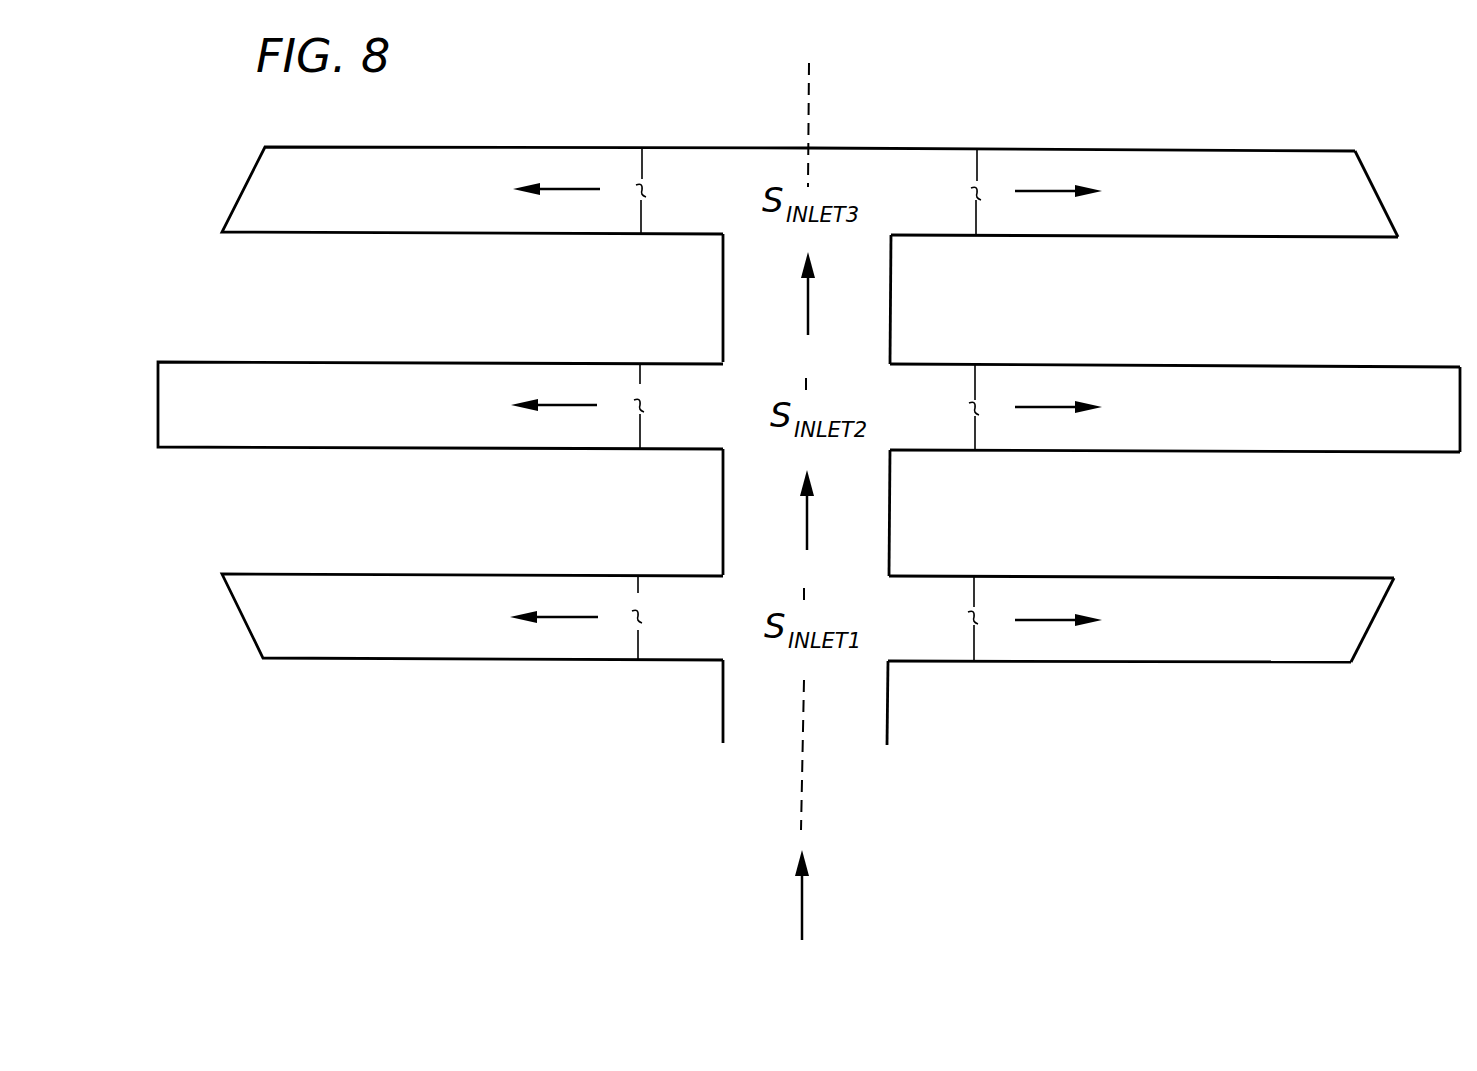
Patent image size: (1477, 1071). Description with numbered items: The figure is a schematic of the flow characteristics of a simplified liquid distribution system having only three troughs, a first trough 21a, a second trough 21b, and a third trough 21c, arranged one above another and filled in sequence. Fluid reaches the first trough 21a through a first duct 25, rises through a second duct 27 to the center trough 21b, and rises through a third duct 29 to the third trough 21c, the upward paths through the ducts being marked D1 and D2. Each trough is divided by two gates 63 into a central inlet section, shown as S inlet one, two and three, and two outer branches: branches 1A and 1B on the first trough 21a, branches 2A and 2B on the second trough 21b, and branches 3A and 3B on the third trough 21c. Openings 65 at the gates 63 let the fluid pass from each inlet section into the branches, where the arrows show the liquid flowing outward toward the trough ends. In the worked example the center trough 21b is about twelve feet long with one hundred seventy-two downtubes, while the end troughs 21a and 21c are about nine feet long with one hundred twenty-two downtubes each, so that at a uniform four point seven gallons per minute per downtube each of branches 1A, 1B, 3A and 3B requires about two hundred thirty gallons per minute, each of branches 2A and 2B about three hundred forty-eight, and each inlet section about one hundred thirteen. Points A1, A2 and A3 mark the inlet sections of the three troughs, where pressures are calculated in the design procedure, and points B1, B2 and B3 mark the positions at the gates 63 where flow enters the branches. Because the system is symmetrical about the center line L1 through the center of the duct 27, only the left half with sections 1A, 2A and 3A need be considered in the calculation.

The first trough left branch 1A is at (445, 660).
The first trough right branch 1B is at (1078, 663).
The second trough left branch 2A is at (415, 450).
The second trough right branch 2B is at (1096, 452).
The third trough left branch 3A is at (447, 237).
The third trough right branch 3B is at (1108, 238).
The first trough 21a is at (1372, 651).
The second trough 21b is at (1476, 373).
The third trough 21c is at (1372, 185).
The first duct 25 is at (889, 728).
The second duct 27 is at (890, 513).
The third duct 29 is at (891, 298).
The gate 63 is at (641, 166).
The partition opening 65 is at (636, 195).
The first inlet point A1 is at (807, 663).
The second inlet point A2 is at (809, 456).
The third inlet point A3 is at (811, 241).
The first branch point B1 is at (806, 619).
The second branch point B2 is at (806, 408).
The third branch point B3 is at (807, 192).
The first duct flow path D1 is at (807, 529).
The second duct flow path D2 is at (807, 313).
The center line L1 is at (832, 442).